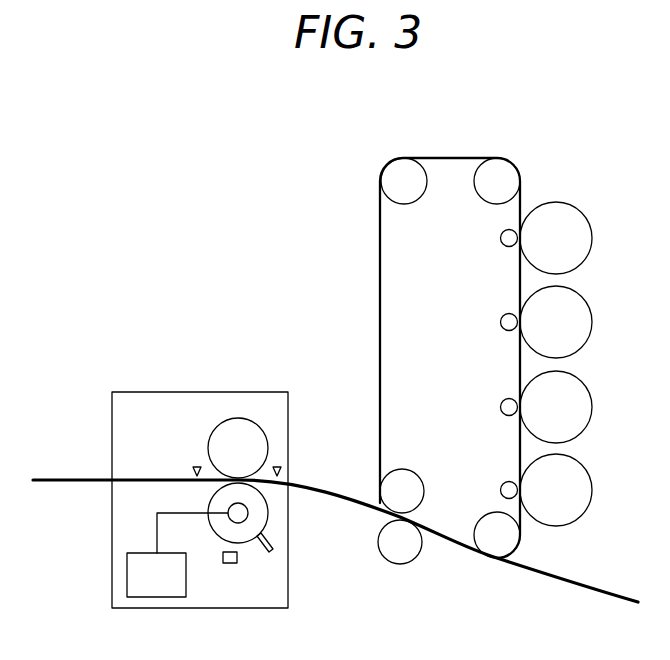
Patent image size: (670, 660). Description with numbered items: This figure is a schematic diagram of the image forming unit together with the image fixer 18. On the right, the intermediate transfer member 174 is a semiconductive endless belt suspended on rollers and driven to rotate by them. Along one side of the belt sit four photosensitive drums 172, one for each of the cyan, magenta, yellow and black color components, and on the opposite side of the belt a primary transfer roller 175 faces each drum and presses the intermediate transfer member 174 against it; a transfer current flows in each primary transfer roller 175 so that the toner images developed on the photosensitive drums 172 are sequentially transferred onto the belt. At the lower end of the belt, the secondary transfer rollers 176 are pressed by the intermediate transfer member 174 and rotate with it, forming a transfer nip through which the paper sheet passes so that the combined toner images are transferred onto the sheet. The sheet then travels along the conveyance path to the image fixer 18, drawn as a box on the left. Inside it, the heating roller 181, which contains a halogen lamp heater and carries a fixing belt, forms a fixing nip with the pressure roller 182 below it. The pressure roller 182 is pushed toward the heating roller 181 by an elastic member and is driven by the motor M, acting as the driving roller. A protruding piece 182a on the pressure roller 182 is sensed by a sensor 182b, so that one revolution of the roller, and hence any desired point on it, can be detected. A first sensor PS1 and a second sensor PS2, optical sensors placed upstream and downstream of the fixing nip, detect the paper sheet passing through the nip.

The image fixer 18 is at (127, 392).
The photosensitive drum 172 is at (585, 240).
The intermediate transfer member 174 is at (451, 158).
The primary transfer roller 175 is at (502, 236).
The secondary transfer roller 176 is at (393, 497).
The heating roller 181 is at (248, 435).
The pressure roller 182 is at (218, 497).
The protruding piece 182a is at (265, 560).
The sensor 182b is at (225, 562).
The first sensor PS1 is at (281, 469).
The second sensor PS2 is at (194, 469).